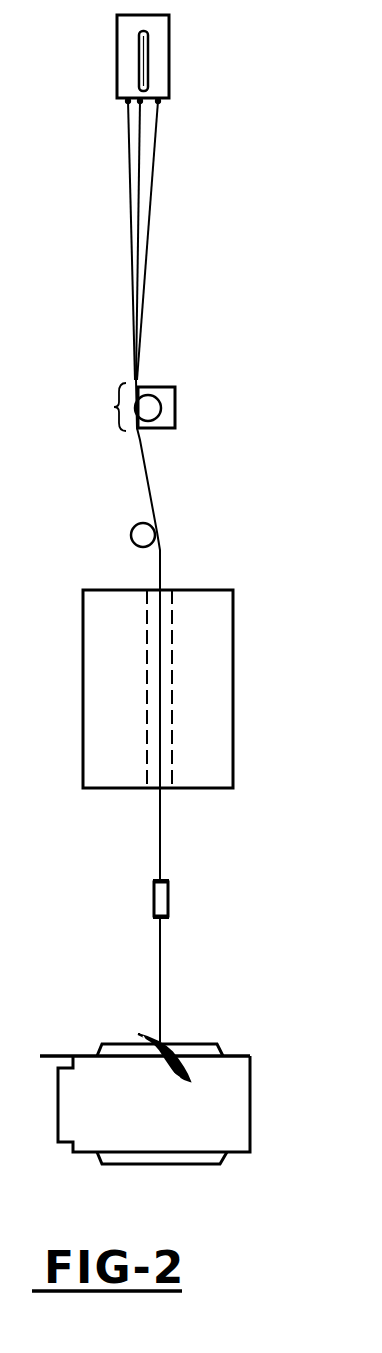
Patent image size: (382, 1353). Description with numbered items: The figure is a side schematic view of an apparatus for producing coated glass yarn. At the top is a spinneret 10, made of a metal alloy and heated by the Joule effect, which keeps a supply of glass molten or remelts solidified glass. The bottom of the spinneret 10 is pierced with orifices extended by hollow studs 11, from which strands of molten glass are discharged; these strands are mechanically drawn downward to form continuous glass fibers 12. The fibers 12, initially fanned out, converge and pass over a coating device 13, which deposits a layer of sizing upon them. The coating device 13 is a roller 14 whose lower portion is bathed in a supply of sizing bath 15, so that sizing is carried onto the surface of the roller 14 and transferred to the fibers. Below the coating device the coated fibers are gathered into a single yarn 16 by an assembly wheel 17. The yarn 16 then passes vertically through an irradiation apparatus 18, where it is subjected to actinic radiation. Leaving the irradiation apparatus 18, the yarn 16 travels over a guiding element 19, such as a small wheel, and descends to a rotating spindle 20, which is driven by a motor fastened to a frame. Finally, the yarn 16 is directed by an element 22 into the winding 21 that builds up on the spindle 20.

The spinneret 10 is at (169, 68).
The hollow studs 11 is at (126, 102).
The continuous glass fibers 12 is at (150, 193).
The coating device 13 is at (104, 407).
The roller 14 is at (166, 398).
The sizing bath 15 is at (176, 427).
The yarn 16 is at (160, 570).
The assembly wheel 17 is at (131, 530).
The irradiation apparatus 18 is at (233, 702).
The guiding element 19 is at (152, 897).
The rotating spindle 20 is at (228, 1120).
The winding 21 is at (190, 1158).
The element 22 is at (165, 1044).